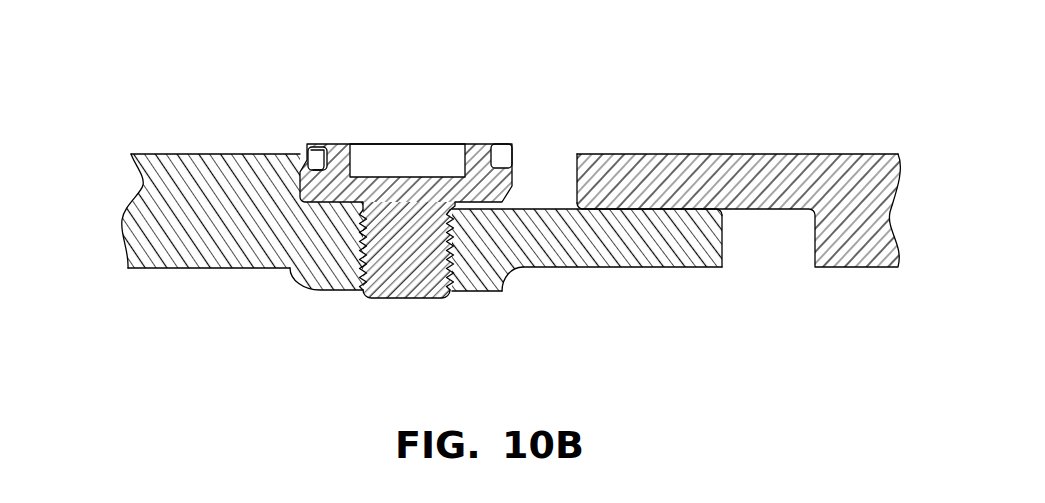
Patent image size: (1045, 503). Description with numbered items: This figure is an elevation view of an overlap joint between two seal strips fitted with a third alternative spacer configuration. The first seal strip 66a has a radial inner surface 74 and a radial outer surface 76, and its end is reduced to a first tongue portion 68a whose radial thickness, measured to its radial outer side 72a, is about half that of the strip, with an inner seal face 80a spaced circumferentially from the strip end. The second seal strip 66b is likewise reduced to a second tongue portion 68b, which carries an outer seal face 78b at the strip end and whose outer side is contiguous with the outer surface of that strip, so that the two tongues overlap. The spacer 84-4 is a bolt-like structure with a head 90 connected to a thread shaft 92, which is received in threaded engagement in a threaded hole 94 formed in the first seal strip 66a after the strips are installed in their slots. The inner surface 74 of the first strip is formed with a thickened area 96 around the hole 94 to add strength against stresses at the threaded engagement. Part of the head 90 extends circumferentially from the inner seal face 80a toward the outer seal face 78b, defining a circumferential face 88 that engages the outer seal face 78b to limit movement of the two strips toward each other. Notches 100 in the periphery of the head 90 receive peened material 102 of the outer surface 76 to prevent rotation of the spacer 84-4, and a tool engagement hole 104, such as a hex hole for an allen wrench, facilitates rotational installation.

The first seal strip 66a is at (210, 199).
The radial inner surface 74 is at (237, 268).
The radial outer surface 76 is at (195, 152).
The thickened area 96 is at (320, 292).
The material of the outer surface 102 is at (316, 150).
The notches 100 is at (315, 146).
The tool engagement hole 104 is at (357, 145).
The head 90 is at (342, 119).
The spacer 84-4 is at (353, 192).
The thread shaft 92 is at (437, 294).
The threaded hole 94 is at (368, 274).
The circumferential face 88 is at (583, 268).
The inner seal face 80a is at (522, 270).
The radial outer side 72a is at (557, 208).
The first tongue portion 68a is at (629, 195).
The outer seal face 78b is at (577, 178).
The second tongue portion 68b is at (686, 154).
The second seal strip 66b is at (739, 149).